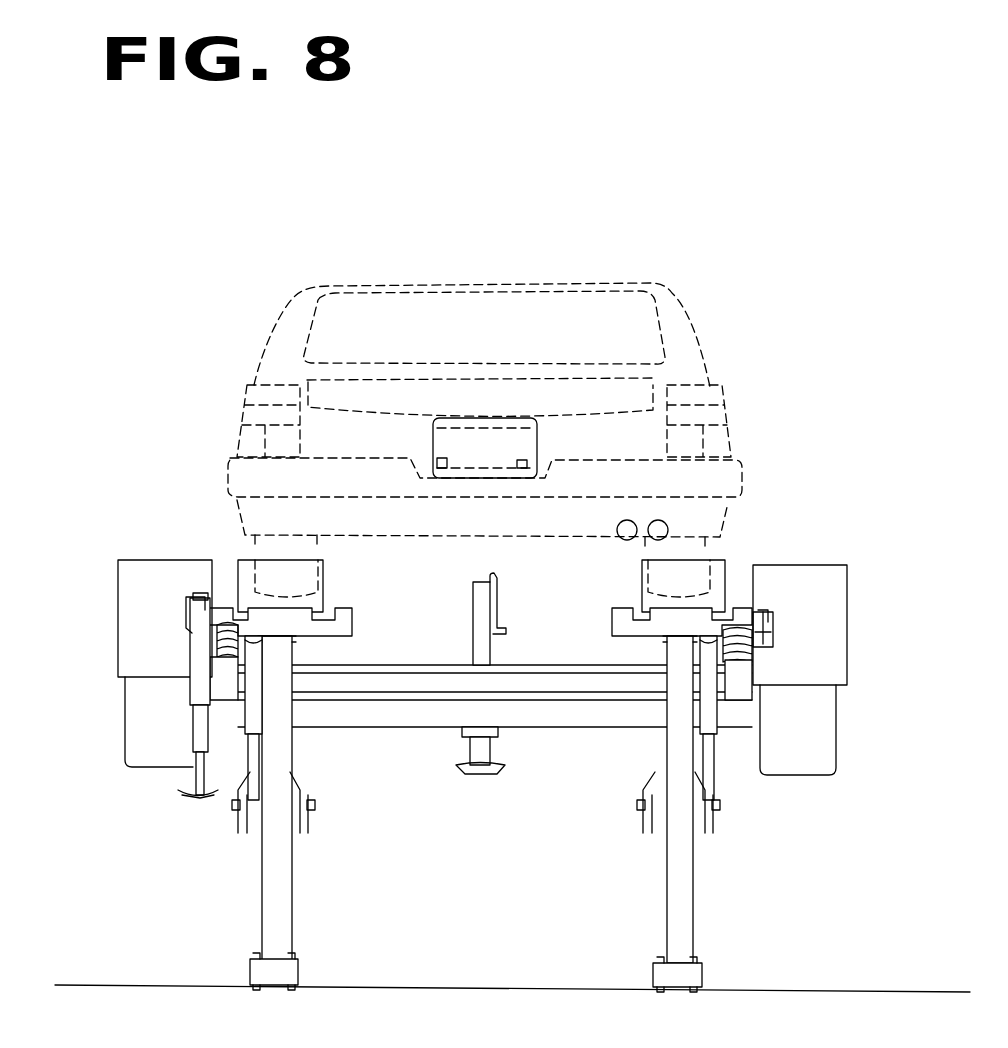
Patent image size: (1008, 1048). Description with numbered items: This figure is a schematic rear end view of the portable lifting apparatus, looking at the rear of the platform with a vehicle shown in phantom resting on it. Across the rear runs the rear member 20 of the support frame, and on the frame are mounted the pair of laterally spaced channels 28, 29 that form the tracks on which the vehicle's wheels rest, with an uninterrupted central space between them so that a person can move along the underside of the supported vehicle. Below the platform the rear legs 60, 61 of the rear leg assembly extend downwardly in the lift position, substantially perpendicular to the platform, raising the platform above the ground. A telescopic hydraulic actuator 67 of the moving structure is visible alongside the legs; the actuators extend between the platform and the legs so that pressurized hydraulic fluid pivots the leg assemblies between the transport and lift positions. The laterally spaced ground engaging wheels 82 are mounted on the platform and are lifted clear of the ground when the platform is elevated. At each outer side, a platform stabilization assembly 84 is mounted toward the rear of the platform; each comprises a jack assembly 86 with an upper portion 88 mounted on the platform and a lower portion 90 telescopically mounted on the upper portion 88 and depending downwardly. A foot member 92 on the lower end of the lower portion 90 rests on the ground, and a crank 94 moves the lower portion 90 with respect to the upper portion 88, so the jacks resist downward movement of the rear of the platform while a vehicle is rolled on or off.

The rear member 20 is at (362, 665).
The channel 28 is at (663, 614).
The channel 29 is at (288, 615).
The rear leg 60 is at (680, 915).
The rear leg 61 is at (280, 898).
The telescopic hydraulic actuator 67 is at (250, 715).
The ground engaging wheel 82 is at (808, 710).
The platform stabilization assembly 84 is at (197, 580).
The jack assembly 86 is at (200, 650).
The upper portion 88 is at (197, 672).
The lower portion 90 is at (195, 743).
The foot member 92 is at (198, 797).
The crank 94 is at (185, 607).